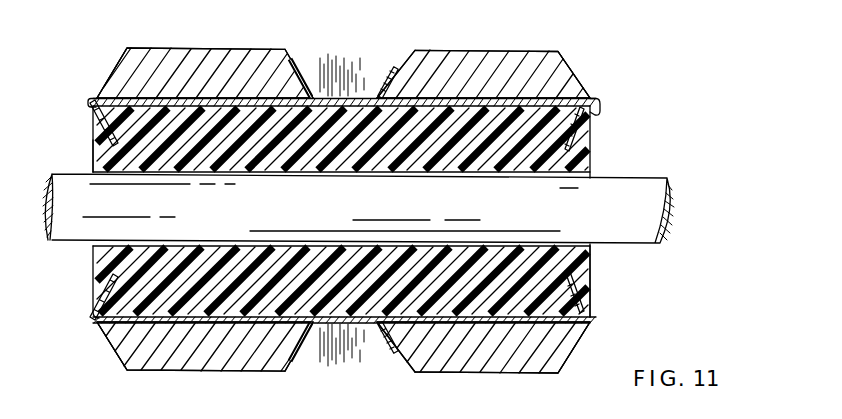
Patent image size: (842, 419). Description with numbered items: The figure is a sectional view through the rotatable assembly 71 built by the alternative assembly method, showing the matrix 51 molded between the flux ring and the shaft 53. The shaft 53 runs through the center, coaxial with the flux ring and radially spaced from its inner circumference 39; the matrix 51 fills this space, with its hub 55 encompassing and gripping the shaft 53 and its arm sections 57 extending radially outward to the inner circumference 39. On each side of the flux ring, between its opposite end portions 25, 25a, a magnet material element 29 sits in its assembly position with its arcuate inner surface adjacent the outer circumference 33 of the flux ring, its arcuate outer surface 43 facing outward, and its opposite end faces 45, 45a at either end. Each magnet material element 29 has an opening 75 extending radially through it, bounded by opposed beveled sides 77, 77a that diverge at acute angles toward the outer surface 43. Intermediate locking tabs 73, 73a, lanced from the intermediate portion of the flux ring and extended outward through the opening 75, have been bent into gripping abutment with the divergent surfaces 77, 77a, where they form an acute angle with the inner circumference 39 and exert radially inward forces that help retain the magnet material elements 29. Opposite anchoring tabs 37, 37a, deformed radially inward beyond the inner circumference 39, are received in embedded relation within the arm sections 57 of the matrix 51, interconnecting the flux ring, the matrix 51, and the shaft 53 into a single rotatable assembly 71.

The magnet material element 29 is at (173, 43).
The rotatable assembly 71 is at (583, 42).
The arcuate outer surface 43 is at (492, 50).
The outer circumference 33 is at (462, 373).
The end face 45 is at (125, 60).
The end face 45a is at (571, 68).
The intermediate locking tab 73 is at (308, 70).
The intermediate locking tab 73a is at (377, 72).
The beveled side 77 is at (292, 68).
The beveled side 77a is at (398, 78).
The opening 75 is at (337, 55).
The inner circumference 39 is at (467, 318).
The matrix 51 is at (533, 258).
The end portion 25 is at (97, 97).
The end portion 25a is at (588, 99).
The hub 55 is at (107, 168).
The arm section 57 is at (583, 157).
The anchoring tab 37 is at (118, 138).
The anchoring tab 37a is at (575, 125).
The shaft 53 is at (226, 213).